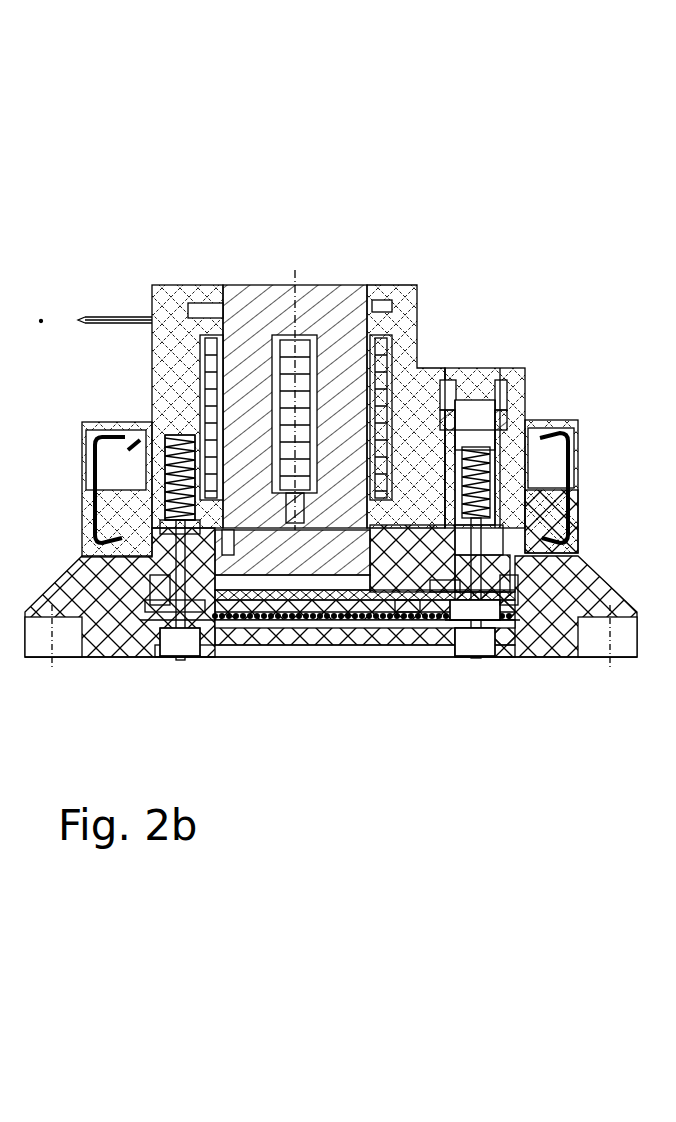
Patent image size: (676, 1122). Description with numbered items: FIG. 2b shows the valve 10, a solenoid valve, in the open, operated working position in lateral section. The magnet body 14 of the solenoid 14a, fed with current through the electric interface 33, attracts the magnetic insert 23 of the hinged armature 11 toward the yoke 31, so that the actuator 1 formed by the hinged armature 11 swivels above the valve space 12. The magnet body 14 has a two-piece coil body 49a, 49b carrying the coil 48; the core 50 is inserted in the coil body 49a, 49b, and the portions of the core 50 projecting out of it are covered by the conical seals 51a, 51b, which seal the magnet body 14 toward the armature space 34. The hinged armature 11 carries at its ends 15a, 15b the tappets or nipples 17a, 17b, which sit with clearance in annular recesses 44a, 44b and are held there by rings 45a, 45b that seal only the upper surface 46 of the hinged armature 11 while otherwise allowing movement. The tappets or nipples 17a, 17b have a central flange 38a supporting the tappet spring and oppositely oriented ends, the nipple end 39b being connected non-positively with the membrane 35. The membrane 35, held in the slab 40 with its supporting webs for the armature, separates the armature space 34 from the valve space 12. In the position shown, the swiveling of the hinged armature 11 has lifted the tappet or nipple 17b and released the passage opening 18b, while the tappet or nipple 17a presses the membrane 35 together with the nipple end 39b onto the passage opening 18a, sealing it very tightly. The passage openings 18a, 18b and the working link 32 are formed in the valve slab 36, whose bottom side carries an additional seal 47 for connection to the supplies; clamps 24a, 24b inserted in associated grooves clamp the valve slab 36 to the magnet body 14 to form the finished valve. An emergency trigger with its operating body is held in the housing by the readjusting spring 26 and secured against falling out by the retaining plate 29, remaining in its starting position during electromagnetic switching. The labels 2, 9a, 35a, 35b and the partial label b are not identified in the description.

The actuator 1 is at (352, 650).
The element 2 is at (7, 478).
The element 9a is at (17, 443).
The valve 10 is at (487, 200).
The hinged armature 11 is at (342, 600).
The valve space 12 is at (328, 640).
The magnet body 14 is at (420, 312).
The solenoid 14a is at (366, 272).
The end of the hinged armature 15a is at (470, 602).
The end of the hinged armature 15b is at (152, 600).
The tappet or nipple 17a is at (500, 592).
The tappet or nipple 17b is at (162, 632).
The passage opening 18a is at (405, 615).
The passage opening 18b is at (192, 622).
The insert 23 is at (262, 576).
The clamp 24a is at (578, 422).
The clamp 24b is at (100, 560).
The readjusting spring 26 is at (22, 441).
The retaining plate 29 is at (24, 305).
The yoke 31 is at (347, 268).
The working link 32 is at (276, 600).
The electric interface 33 is at (117, 318).
The armature space 34 is at (362, 602).
The membrane 35 is at (292, 640).
The screw 35a is at (172, 640).
The screw 35b is at (470, 660).
The valve slab 36 is at (492, 640).
The central flange 38a is at (27, 559).
The nipple end 39b is at (470, 642).
The slab 40 is at (302, 605).
The annular recess 44a is at (510, 570).
The annular recess 44b is at (162, 520).
The ring 45a is at (500, 532).
The ring 45b is at (182, 440).
The upper surface of the hinged armature 46 is at (500, 480).
The seal 47 is at (445, 602).
The coil 48 is at (400, 382).
The coil body 49a is at (385, 330).
The coil body 49b is at (208, 345).
The core 50 is at (290, 285).
The seal 51a is at (412, 420).
The seal 51b is at (250, 560).
The element b is at (140, 600).